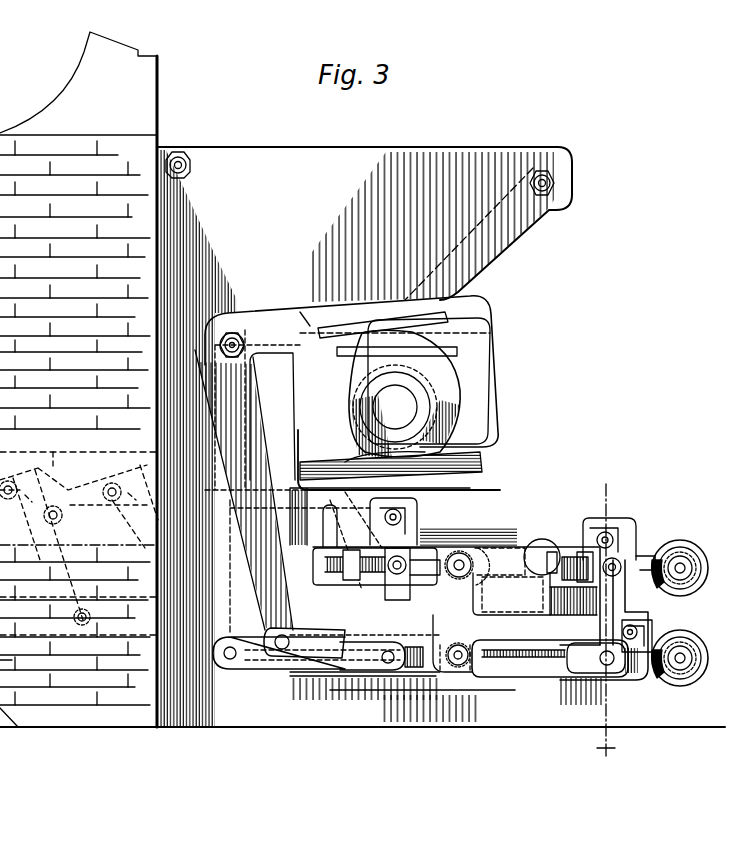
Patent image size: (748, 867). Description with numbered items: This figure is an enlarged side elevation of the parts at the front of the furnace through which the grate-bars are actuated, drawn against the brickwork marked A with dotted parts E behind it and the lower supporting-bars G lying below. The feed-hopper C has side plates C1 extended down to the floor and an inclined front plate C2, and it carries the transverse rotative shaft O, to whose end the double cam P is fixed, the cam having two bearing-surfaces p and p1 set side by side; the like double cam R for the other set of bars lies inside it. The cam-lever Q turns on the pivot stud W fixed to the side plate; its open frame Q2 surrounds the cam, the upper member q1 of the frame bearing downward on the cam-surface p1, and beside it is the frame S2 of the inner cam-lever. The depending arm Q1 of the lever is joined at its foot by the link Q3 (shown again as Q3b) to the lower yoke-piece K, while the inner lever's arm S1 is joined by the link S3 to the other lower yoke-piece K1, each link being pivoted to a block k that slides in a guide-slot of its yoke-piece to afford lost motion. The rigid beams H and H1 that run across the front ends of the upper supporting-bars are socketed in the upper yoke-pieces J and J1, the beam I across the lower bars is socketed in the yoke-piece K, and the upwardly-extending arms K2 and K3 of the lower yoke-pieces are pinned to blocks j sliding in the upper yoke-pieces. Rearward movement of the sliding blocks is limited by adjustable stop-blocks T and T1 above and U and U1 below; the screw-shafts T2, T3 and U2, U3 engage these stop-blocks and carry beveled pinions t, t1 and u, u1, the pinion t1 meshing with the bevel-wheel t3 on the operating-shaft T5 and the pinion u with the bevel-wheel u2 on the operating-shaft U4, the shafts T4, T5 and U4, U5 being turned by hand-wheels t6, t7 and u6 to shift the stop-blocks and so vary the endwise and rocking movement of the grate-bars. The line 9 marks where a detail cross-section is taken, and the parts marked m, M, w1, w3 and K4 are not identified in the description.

The wall A is at (362, 379).
The mechanism behind wall E is at (79, 530).
The supporting-bar G is at (10, 661).
The feed-hopper C is at (364, 210).
The side plate C1 is at (433, 227).
The front plate C2 is at (470, 258).
The cam-lever Q is at (322, 306).
The depending rigid arm Q1 is at (430, 305).
The open frame Q2 is at (283, 402).
The link Q3 is at (270, 655).
The frame lever lower Q3b is at (538, 692).
The pivot stud W is at (236, 342).
The open frame S2 is at (470, 344).
The double cam P is at (448, 380).
The cam bearing-surface p is at (348, 418).
The cam bearing-surface p1 is at (438, 460).
The rotative shaft O is at (420, 408).
The double cam R is at (462, 432).
The upper frame member q1 is at (485, 466).
The rigid beam H1 is at (418, 516).
The upper yoke-piece J1 is at (458, 530).
The stop-block T1 is at (345, 585).
The screw-shaft T3 is at (335, 575).
The depending rigid arm S1 is at (231, 566).
The upwardly-extending arm K3 is at (407, 575).
The beveled gear-pinion t1 is at (433, 577).
The beveled gear-wheel t3 is at (472, 556).
The operating-shaft T5 is at (478, 560).
The hand-wheel t7 is at (533, 540).
The stop m is at (548, 525).
The stop-block T is at (545, 538).
The sliding block j is at (560, 550).
The block M is at (535, 594).
The screw-shaft T2 is at (565, 570).
The rigid beam H is at (622, 532).
The upwardly-extending arm K2 is at (616, 596).
The section line 9 is at (606, 621).
The upper yoke-piece J is at (660, 555).
The operating-shaft T4 is at (692, 555).
The beveled gear-pinion t is at (684, 560).
The hand-wheel t6 is at (692, 568).
The rigid beam I is at (648, 630).
The gear-pinion u is at (692, 648).
The operating-shaft U4 is at (694, 658).
The hand-wheel u6 is at (692, 672).
The beveled gear-wheel u2 is at (687, 690).
The lower yoke-piece K is at (642, 682).
The sliding block k is at (622, 688).
The stop-block U is at (515, 688).
The screw-shaft U2 is at (568, 677).
The operating-shaft U5 is at (472, 645).
The ratchet w3 is at (478, 690).
The gear-pinion u1 is at (455, 690).
The pawl w1 is at (448, 690).
The lower yoke-piece K1 is at (426, 692).
The screw-shaft U3 is at (338, 690).
The stop-block U1 is at (378, 672).
The link K4 is at (412, 672).
The link S3 is at (282, 668).